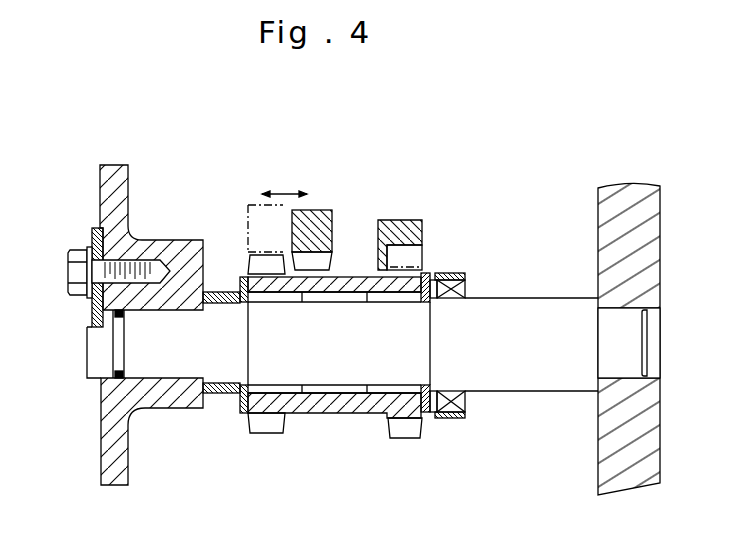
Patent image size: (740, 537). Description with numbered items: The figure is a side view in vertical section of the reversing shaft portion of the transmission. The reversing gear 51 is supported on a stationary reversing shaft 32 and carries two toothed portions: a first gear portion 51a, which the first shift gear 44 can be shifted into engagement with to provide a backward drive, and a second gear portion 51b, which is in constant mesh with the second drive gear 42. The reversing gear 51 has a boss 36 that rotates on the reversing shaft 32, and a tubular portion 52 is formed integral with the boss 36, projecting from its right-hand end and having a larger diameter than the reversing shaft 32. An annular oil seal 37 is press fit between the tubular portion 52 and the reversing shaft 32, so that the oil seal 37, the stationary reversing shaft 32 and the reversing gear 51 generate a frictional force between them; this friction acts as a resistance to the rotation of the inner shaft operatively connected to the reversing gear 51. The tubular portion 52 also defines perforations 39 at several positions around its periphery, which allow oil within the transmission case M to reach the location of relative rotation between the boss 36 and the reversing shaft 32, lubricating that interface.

The transmission case M is at (101, 452).
The reversing shaft 32 is at (528, 378).
The boss 36 is at (330, 412).
The oil seal 37 is at (466, 286).
The perforations 39 is at (432, 269).
The second drive gear 42 is at (410, 220).
The first shift gear 44 is at (331, 235).
The reversing gear 51 is at (357, 413).
The first gear portion 51a is at (265, 428).
The second gear portion 51b is at (410, 438).
The tubular portion 52 is at (457, 272).